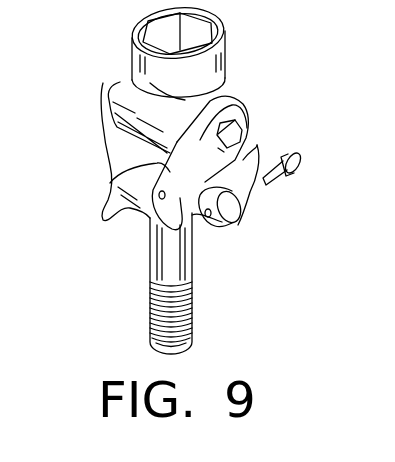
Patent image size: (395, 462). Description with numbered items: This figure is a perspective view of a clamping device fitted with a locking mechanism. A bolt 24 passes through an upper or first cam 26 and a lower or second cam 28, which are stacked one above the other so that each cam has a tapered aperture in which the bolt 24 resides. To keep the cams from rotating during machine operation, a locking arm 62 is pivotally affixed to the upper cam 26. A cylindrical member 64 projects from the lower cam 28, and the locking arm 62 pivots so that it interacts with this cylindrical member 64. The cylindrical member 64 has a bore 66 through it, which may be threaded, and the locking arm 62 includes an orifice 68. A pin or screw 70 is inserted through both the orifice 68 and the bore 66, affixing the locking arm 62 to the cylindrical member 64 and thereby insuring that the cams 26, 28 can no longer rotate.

The bolt 24 is at (158, 271).
The upper cam 26 is at (108, 95).
The lower cam 28 is at (240, 177).
The locking arm 62 is at (122, 180).
The cylindrical member 64 is at (232, 212).
The bore 66 is at (208, 217).
The orifice 68 is at (160, 199).
The pin or screw 70 is at (303, 172).